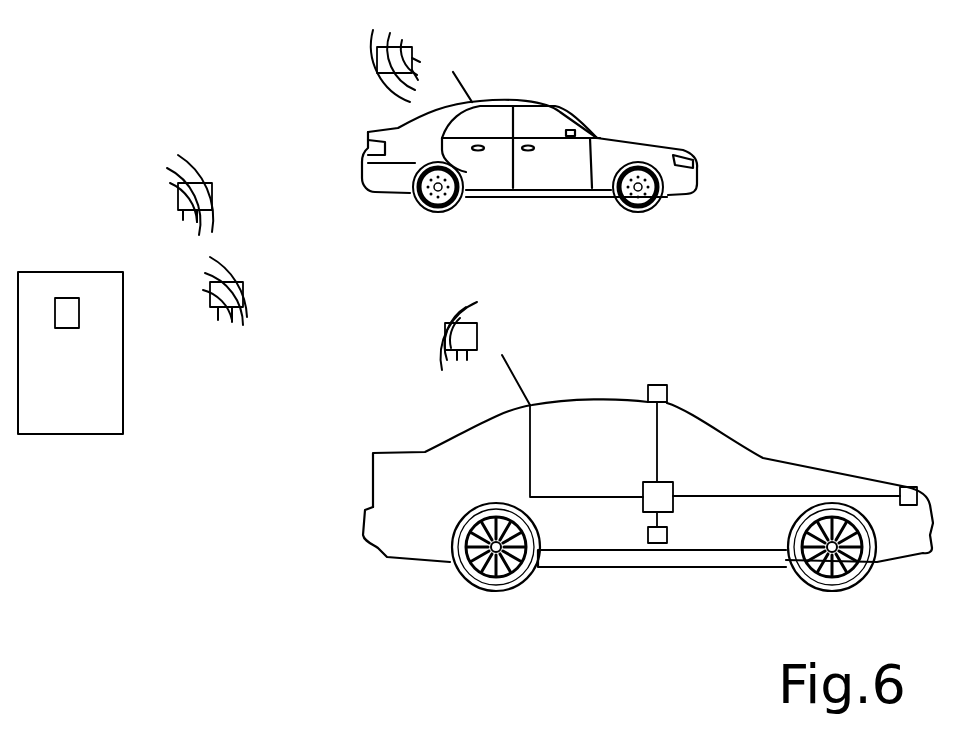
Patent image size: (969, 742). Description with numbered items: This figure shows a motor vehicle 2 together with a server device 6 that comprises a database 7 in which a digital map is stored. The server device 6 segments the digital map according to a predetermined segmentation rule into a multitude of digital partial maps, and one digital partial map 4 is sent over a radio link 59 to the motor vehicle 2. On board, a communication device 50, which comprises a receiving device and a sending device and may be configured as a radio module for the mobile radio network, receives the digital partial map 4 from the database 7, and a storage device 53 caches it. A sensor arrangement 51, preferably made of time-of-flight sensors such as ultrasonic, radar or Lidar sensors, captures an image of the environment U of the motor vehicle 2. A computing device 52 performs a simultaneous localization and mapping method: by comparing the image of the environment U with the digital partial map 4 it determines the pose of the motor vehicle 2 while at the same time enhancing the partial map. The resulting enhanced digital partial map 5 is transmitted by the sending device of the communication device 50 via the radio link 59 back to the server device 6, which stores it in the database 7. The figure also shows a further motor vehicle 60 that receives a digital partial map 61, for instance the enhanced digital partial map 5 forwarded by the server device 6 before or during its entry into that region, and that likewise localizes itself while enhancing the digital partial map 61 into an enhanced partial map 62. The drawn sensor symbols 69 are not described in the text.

The motor vehicle 2 is at (648, 505).
The digital partial map 4 is at (237, 320).
The enhanced digital partial map 5 is at (447, 327).
The server device 6 is at (70, 372).
The database 7 is at (67, 308).
The communication device 50 is at (513, 370).
The sensor arrangement 51 is at (668, 395).
The computing device 52 is at (673, 488).
The storage device 53 is at (657, 545).
The radio link 59 is at (314, 350).
The further motor vehicle 60 is at (527, 209).
The digital partial map 61 is at (178, 188).
The enhanced partial map 62 is at (378, 70).
The sensor device 69 is at (251, 132).
The environment U is at (848, 352).